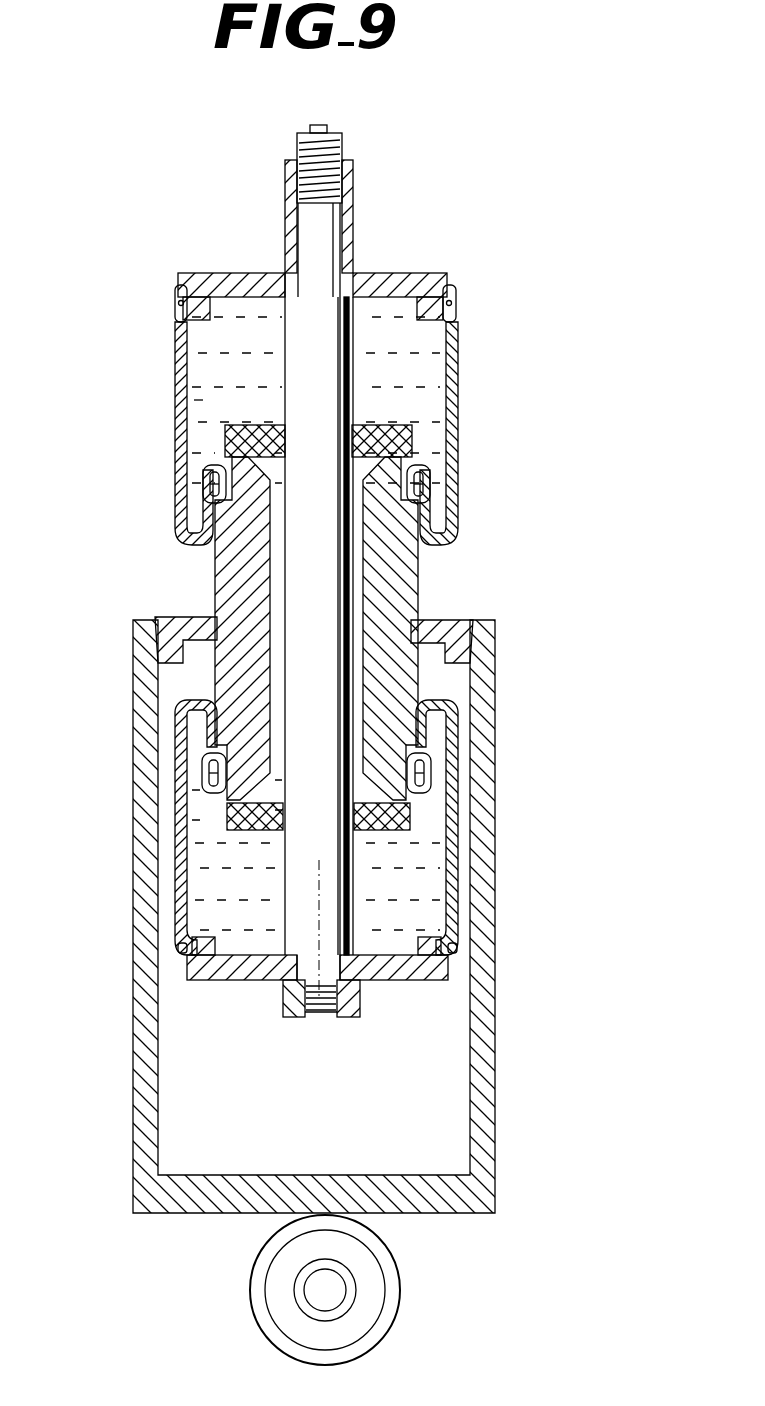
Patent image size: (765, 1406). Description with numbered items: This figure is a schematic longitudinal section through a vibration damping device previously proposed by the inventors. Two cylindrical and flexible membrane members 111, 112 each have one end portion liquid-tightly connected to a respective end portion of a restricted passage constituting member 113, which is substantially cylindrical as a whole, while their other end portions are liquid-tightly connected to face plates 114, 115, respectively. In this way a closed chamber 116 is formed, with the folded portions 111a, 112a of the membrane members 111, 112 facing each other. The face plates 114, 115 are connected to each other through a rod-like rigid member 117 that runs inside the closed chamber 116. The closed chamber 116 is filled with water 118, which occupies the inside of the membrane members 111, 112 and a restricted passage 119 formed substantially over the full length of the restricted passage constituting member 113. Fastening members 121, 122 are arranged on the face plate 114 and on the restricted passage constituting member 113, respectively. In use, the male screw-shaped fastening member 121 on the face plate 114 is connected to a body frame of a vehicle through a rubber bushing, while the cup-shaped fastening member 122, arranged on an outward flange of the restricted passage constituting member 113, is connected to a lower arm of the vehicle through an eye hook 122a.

The membrane member 111 is at (463, 402).
The folded portion 111a is at (453, 548).
The membrane member 112 is at (462, 847).
The folded portion 112a is at (453, 698).
The restricted passage constituting member 113 is at (421, 582).
The face plate 114 is at (393, 272).
The face plate 115 is at (403, 982).
The closed chamber 116 is at (249, 370).
The rod-like rigid member 117 is at (297, 568).
The water 118 is at (197, 400).
The restricted passage 119 is at (360, 652).
The fastening member 121 is at (342, 134).
The fastening member 122 is at (132, 939).
The eye hook 122a is at (400, 1298).